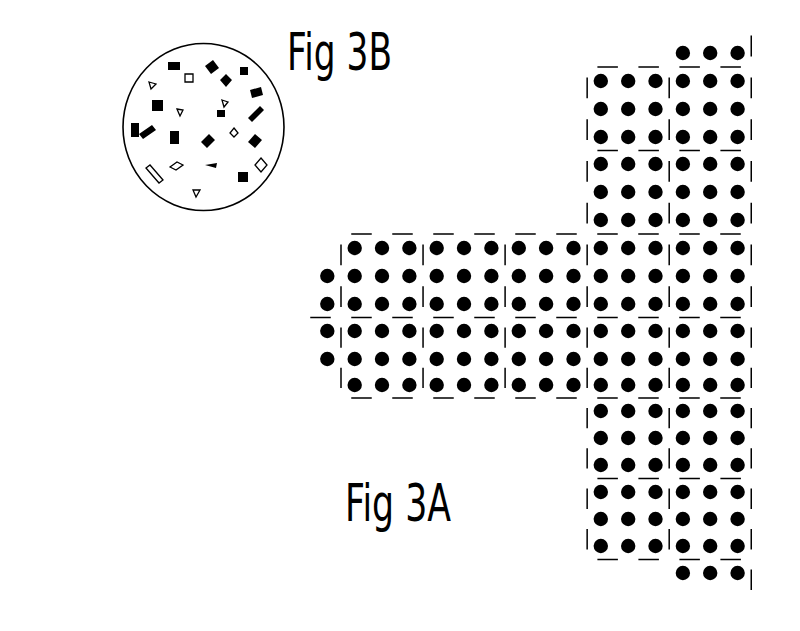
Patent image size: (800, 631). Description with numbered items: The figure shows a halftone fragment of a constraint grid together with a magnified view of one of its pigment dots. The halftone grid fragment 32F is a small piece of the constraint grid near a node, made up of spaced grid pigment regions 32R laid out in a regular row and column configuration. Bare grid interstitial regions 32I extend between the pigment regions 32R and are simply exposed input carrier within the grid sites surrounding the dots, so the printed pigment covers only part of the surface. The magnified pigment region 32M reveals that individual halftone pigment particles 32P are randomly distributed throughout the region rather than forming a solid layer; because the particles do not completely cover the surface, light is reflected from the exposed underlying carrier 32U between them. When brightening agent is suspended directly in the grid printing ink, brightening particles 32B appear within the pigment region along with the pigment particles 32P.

In FIG. 3A, the halftone grid fragment 32F is at (525, 313).
In FIG. 3A, the grid pigment regions 32R is at (595, 80).
In FIG. 3A, the grid interstitial regions 32I is at (598, 123).
In FIG. 3B, the magnified pigment region 32M is at (240, 145).
In FIG. 3B, the halftone pigment particles 32P is at (259, 97).
In FIG. 3B, the exposed underlying carrier 32U is at (277, 132).
In FIG. 3B, the brightening particles 32B is at (267, 168).